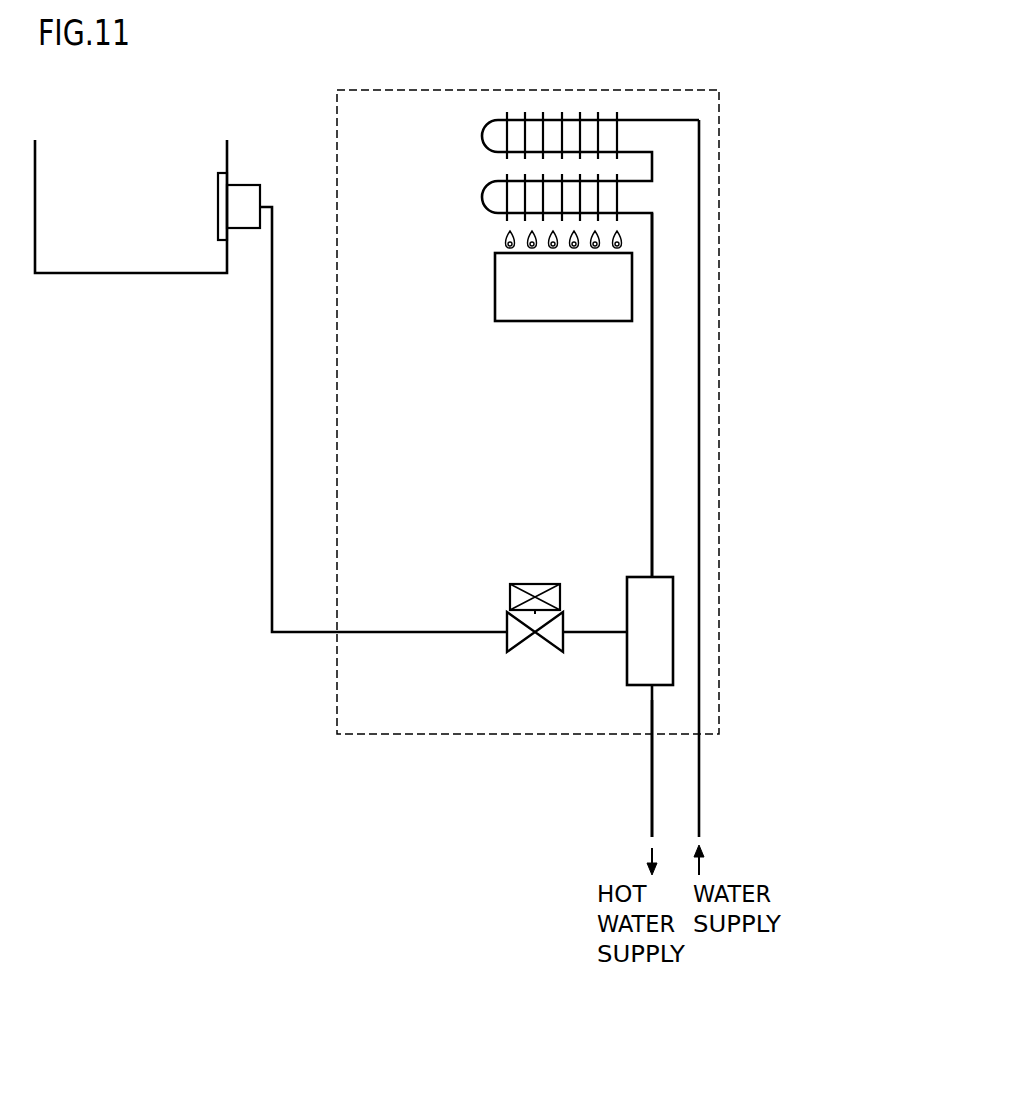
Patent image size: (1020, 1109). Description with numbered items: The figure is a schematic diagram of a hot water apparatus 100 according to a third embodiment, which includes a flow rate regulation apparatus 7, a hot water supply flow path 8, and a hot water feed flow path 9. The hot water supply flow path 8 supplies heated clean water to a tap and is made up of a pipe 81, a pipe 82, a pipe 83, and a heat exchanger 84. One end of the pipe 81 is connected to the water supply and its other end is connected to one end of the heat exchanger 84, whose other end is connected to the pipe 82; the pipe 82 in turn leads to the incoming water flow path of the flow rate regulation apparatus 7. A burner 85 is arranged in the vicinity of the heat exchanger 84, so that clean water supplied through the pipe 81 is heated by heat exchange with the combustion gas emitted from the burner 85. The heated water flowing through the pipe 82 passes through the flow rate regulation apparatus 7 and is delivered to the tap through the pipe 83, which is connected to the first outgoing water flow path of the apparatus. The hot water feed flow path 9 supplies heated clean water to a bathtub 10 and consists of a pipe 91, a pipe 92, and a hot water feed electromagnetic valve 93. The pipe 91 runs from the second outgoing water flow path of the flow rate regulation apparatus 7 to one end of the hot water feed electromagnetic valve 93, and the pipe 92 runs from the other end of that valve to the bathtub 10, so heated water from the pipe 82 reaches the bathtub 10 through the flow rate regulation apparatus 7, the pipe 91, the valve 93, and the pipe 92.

The bathtub 10 is at (127, 273).
The hot water apparatus 100 is at (337, 690).
The pipe 92 is at (355, 632).
The hot water feed electromagnetic valve 93 is at (506, 638).
The pipe 91 is at (578, 632).
The hot water feed flow path 9 is at (582, 868).
The flow rate regulation apparatus 7 is at (651, 665).
The heat exchanger 84 is at (628, 181).
The burner 85 is at (632, 278).
The pipe 81 is at (699, 542).
The pipe 82 is at (652, 473).
The pipe 83 is at (652, 757).
The hot water supply flow path 8 is at (778, 463).